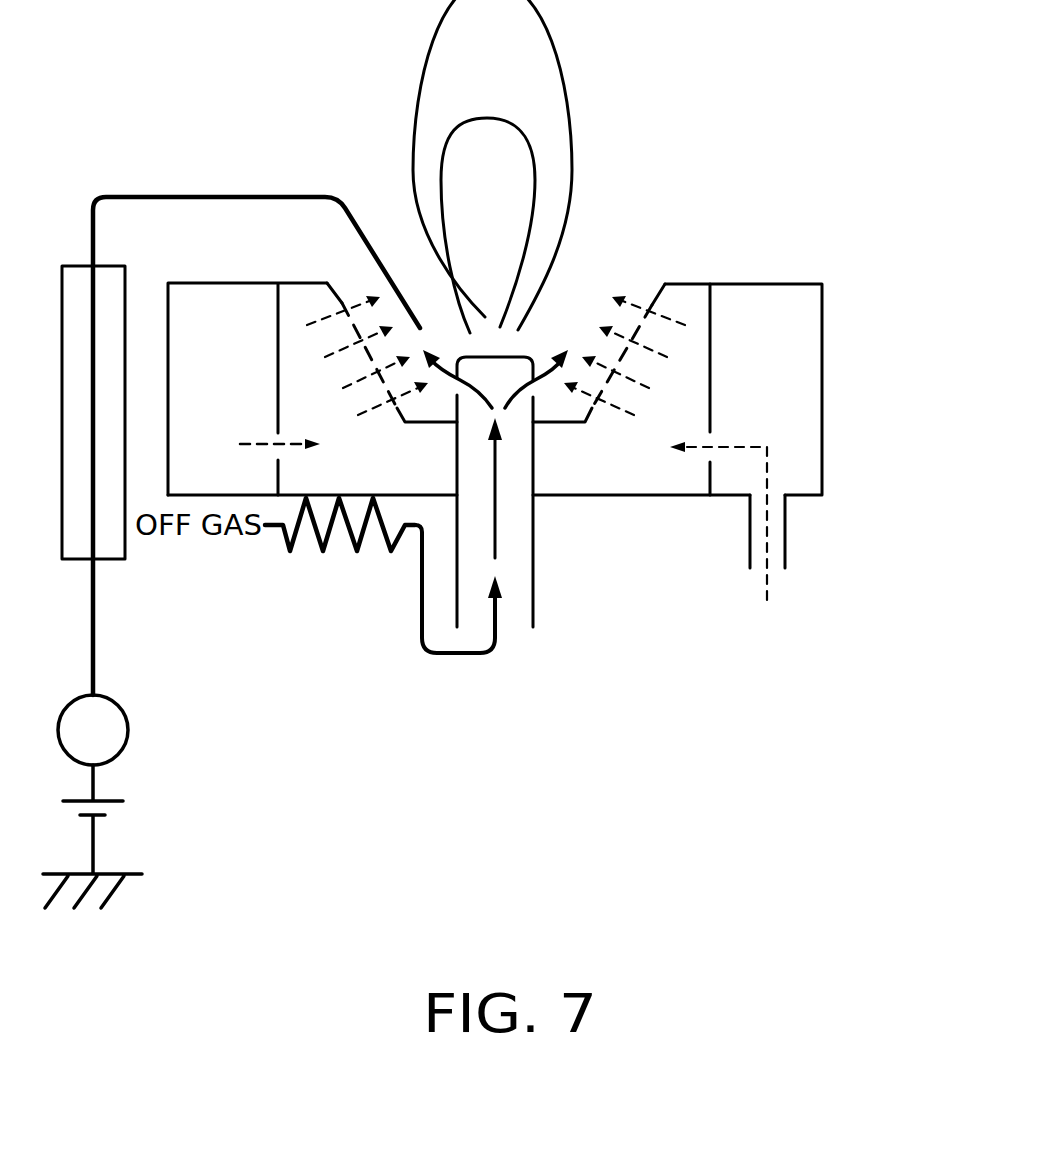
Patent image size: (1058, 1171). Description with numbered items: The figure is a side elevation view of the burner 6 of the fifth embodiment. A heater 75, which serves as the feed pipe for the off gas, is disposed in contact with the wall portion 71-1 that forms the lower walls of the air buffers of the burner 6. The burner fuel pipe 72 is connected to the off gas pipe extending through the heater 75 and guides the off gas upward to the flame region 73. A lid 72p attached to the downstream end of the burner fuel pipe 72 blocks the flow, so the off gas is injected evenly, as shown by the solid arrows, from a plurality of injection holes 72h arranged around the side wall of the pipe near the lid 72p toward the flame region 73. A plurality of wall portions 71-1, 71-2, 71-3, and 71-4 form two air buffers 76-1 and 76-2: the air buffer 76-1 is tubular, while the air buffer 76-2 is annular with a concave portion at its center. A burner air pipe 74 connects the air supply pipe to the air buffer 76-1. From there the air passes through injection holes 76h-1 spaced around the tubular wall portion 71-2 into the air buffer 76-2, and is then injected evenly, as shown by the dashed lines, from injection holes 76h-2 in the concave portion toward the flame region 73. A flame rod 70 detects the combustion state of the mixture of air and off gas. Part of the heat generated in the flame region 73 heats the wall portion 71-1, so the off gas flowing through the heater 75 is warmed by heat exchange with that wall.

The burner 6 is at (816, 168).
The flame rod 70 is at (218, 197).
The wall portion 71-1 is at (670, 497).
The tubular wall portion 71-2 is at (710, 335).
The wall portion 71-3 is at (822, 305).
The wall portion 71-4 is at (665, 284).
The burner fuel pipe 72 is at (533, 597).
The lid 72p is at (480, 357).
The injection holes 72h is at (533, 380).
The flame region 73 is at (494, 320).
The burner air pipe 74 is at (785, 538).
The heater 75 is at (360, 552).
The air buffer 76-1 is at (798, 374).
The air buffer 76-2 is at (562, 478).
The injection holes 76h-1 is at (709, 443).
The injection holes 76h-2 is at (598, 408).